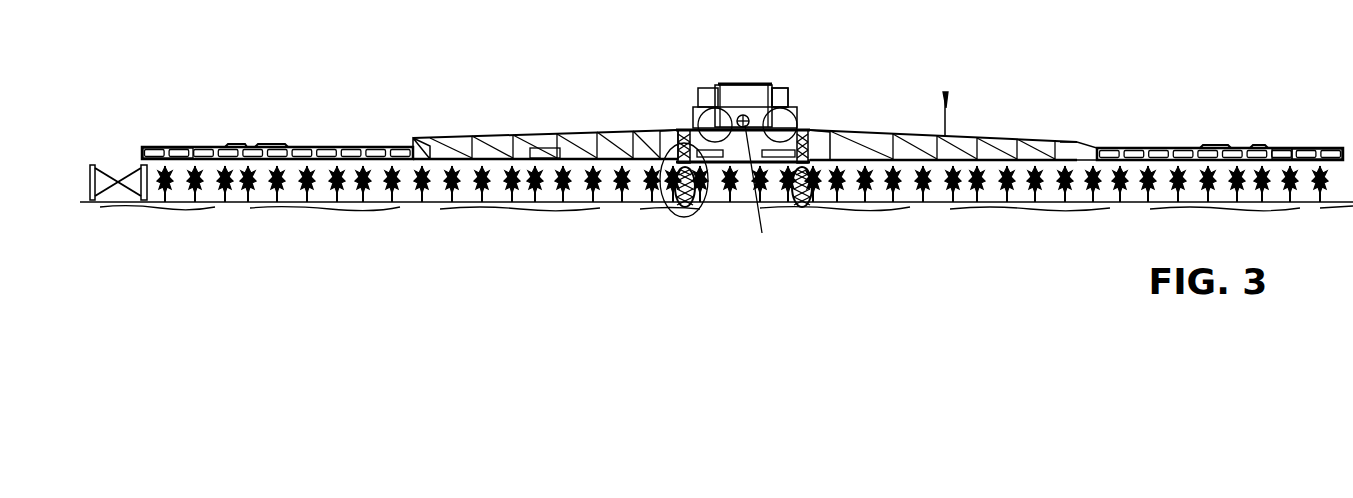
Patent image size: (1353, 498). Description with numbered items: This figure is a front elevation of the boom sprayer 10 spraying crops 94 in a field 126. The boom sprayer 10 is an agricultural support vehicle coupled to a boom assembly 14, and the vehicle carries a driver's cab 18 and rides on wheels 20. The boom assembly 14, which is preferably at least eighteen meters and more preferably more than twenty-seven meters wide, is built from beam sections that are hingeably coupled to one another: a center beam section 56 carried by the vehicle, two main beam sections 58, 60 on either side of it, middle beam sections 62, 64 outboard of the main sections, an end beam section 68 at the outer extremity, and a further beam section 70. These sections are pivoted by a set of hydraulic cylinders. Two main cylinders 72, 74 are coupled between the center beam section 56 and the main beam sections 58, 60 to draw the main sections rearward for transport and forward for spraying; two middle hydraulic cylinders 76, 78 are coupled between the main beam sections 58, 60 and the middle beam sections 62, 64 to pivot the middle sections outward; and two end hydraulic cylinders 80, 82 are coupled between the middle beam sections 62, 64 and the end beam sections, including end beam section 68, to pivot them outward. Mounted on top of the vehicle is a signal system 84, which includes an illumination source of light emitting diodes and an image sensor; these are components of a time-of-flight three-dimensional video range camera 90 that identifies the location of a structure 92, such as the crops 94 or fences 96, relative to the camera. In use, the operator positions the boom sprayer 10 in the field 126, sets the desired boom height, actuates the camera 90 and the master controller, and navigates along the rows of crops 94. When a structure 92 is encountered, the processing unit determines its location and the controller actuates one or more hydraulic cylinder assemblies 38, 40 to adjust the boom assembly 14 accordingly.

The boom sprayer 10 is at (775, 58).
The boom assembly 14 is at (947, 92).
The driver's cab 18 is at (745, 118).
The wheels 20 is at (803, 207).
The hydraulic cylinder assembly 38 is at (660, 200).
The hydraulic cylinder assembly 40 is at (787, 124).
The center beam section 56 is at (762, 233).
The main beam section 58 is at (543, 140).
The main beam section 60 is at (987, 140).
The middle beam section 62 is at (363, 147).
The middle beam section 64 is at (1120, 142).
The end beam section 68 is at (182, 147).
The beam section 70 is at (1220, 148).
The main hydraulic cylinder 72 is at (660, 133).
The main hydraulic cylinder 74 is at (820, 128).
The middle hydraulic cylinder 76 is at (450, 140).
The middle hydraulic cylinder 78 is at (1037, 142).
The end hydraulic cylinder 80 is at (262, 147).
The end hydraulic cylinder 82 is at (1287, 148).
The signal system 84 is at (730, 82).
The 3D video range camera 90 is at (768, 82).
The structure 92 is at (175, 218).
The crops 94 is at (1280, 200).
The fences 96 is at (137, 166).
The field 126 is at (1023, 203).